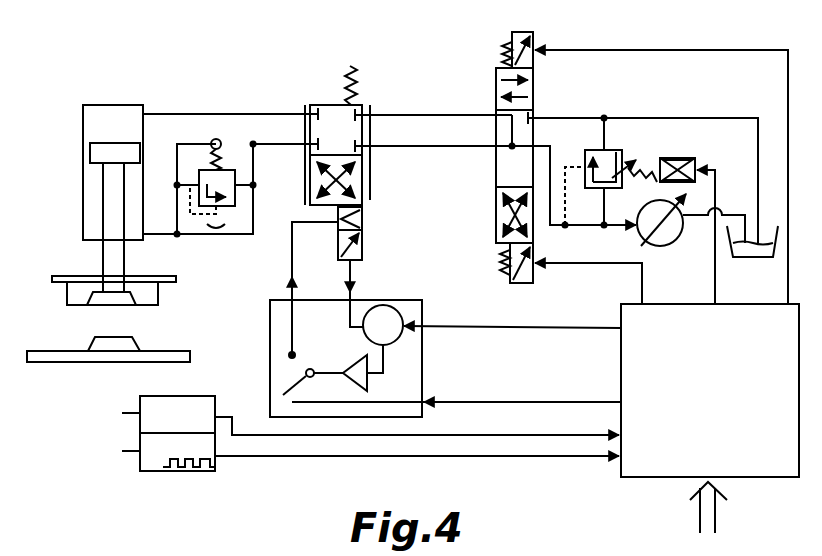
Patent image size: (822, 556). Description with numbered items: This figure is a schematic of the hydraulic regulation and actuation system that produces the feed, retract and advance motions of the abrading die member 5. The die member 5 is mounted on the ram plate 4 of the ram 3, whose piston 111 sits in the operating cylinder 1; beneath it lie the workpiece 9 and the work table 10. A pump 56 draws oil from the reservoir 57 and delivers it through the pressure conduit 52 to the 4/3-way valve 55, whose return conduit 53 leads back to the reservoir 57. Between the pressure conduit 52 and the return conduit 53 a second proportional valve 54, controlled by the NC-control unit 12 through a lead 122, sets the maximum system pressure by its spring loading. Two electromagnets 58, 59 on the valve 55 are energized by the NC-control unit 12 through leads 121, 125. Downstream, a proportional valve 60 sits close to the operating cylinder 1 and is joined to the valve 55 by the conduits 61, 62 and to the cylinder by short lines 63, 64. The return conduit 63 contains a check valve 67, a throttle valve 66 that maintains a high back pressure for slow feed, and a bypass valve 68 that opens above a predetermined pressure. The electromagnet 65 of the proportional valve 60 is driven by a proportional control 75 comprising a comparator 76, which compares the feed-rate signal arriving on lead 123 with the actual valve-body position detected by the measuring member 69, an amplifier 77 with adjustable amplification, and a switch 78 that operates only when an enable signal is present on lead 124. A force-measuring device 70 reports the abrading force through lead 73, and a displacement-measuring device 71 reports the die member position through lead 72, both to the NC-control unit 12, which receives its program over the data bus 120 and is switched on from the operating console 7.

The operating cylinder 1 is at (88, 106).
The piston 111 is at (96, 152).
The ram 3 is at (110, 259).
The ram plate 4 is at (64, 276).
The die member 5 is at (85, 300).
The workpiece 9 is at (120, 346).
The work table 10 is at (108, 346).
The force-measuring device 70 is at (158, 389).
The displacement-measuring device 71 is at (216, 469).
The lead 72 is at (417, 472).
The lead 73 is at (417, 423).
The pressure conduit 64 is at (230, 103).
The return conduit 63 is at (230, 193).
The throttle valve 66 is at (218, 245).
The check valve 67 is at (199, 142).
The bypass valve 68 is at (238, 182).
The proportional valve 60 is at (400, 189).
The electromagnet 65 is at (345, 281).
The measuring member 69 is at (368, 278).
The proportional control 75 is at (270, 356).
The comparator 76 is at (396, 318).
The amplifier 77 is at (366, 382).
The switch 78 is at (305, 355).
The lead 123 is at (512, 316).
The enable line 124 is at (456, 391).
The return conduit 62 is at (433, 104).
The pressure conduit 61 is at (495, 174).
The electromagnet 58 is at (515, 34).
The lead 121 is at (661, 167).
The 4/3-way valve 55 is at (474, 76).
The pressure conduit 52 is at (550, 154).
The electromagnet 59 is at (499, 263).
The lead 125 is at (588, 271).
The return conduit 53 is at (643, 169).
The second proportional valve 54 is at (668, 157).
The lead 122 is at (697, 220).
The pump 56 is at (663, 246).
The reservoir 57 is at (752, 254).
The NC-control unit 12 is at (710, 390).
The operating console 7 is at (697, 507).
The data bus 120 is at (736, 510).